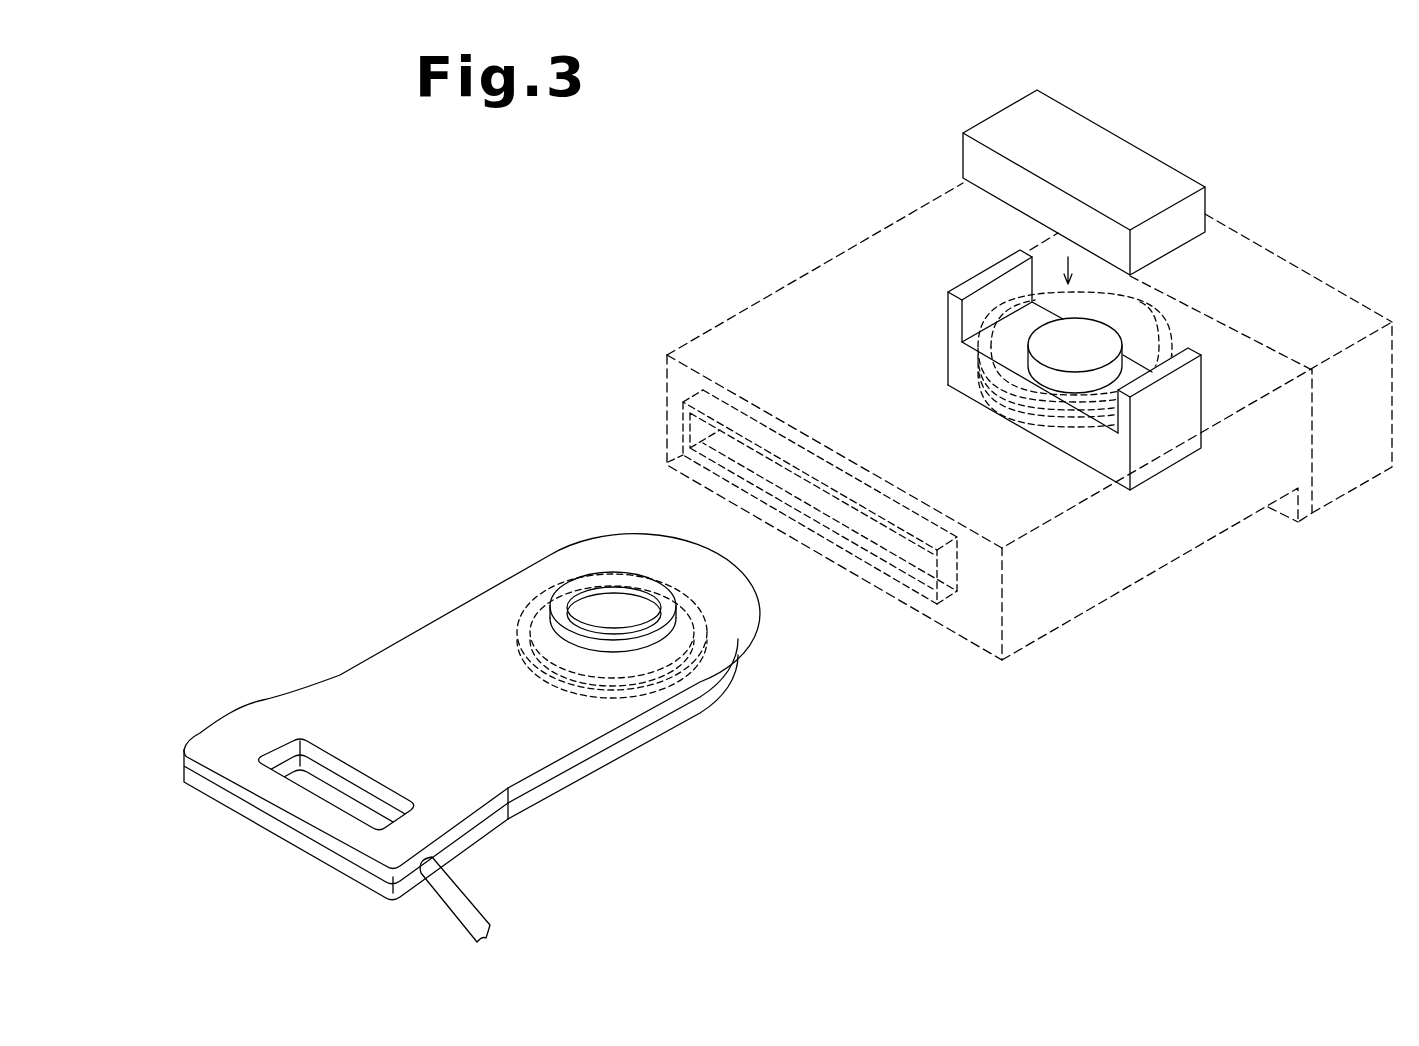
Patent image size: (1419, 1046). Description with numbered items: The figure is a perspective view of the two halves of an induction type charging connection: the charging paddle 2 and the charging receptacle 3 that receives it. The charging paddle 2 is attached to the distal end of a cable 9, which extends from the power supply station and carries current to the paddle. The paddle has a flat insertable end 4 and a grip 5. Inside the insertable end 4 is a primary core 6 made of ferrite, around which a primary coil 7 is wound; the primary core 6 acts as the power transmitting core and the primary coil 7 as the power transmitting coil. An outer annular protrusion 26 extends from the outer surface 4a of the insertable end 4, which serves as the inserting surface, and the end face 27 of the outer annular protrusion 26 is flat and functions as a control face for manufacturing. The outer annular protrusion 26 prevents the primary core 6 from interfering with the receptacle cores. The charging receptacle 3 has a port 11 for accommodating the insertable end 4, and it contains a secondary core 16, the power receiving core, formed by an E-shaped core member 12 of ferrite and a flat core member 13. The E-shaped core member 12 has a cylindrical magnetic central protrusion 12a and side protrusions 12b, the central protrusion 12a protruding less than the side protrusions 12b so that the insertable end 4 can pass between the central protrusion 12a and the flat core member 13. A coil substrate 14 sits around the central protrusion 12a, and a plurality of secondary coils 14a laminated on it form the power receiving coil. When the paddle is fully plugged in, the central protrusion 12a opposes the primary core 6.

The charging paddle 2 is at (298, 633).
The charging receptacle 3 is at (764, 271).
The insertable end 4 is at (731, 610).
The outer surface 4a is at (673, 635).
The grip 5 is at (240, 807).
The primary core 6 is at (590, 606).
The primary coil 7 is at (520, 632).
The cable 9 is at (463, 900).
The port 11 is at (883, 546).
The E-shaped core member 12 is at (1100, 458).
The central protrusion 12a is at (1047, 352).
The side protrusions 12b is at (947, 317).
The flat core member 13 is at (1128, 146).
The coil substrate 14 is at (1160, 310).
The secondary coils 14a is at (1007, 420).
The secondary core 16 is at (944, 297).
The outer annular protrusion 26 is at (630, 652).
The end face 27 is at (662, 592).